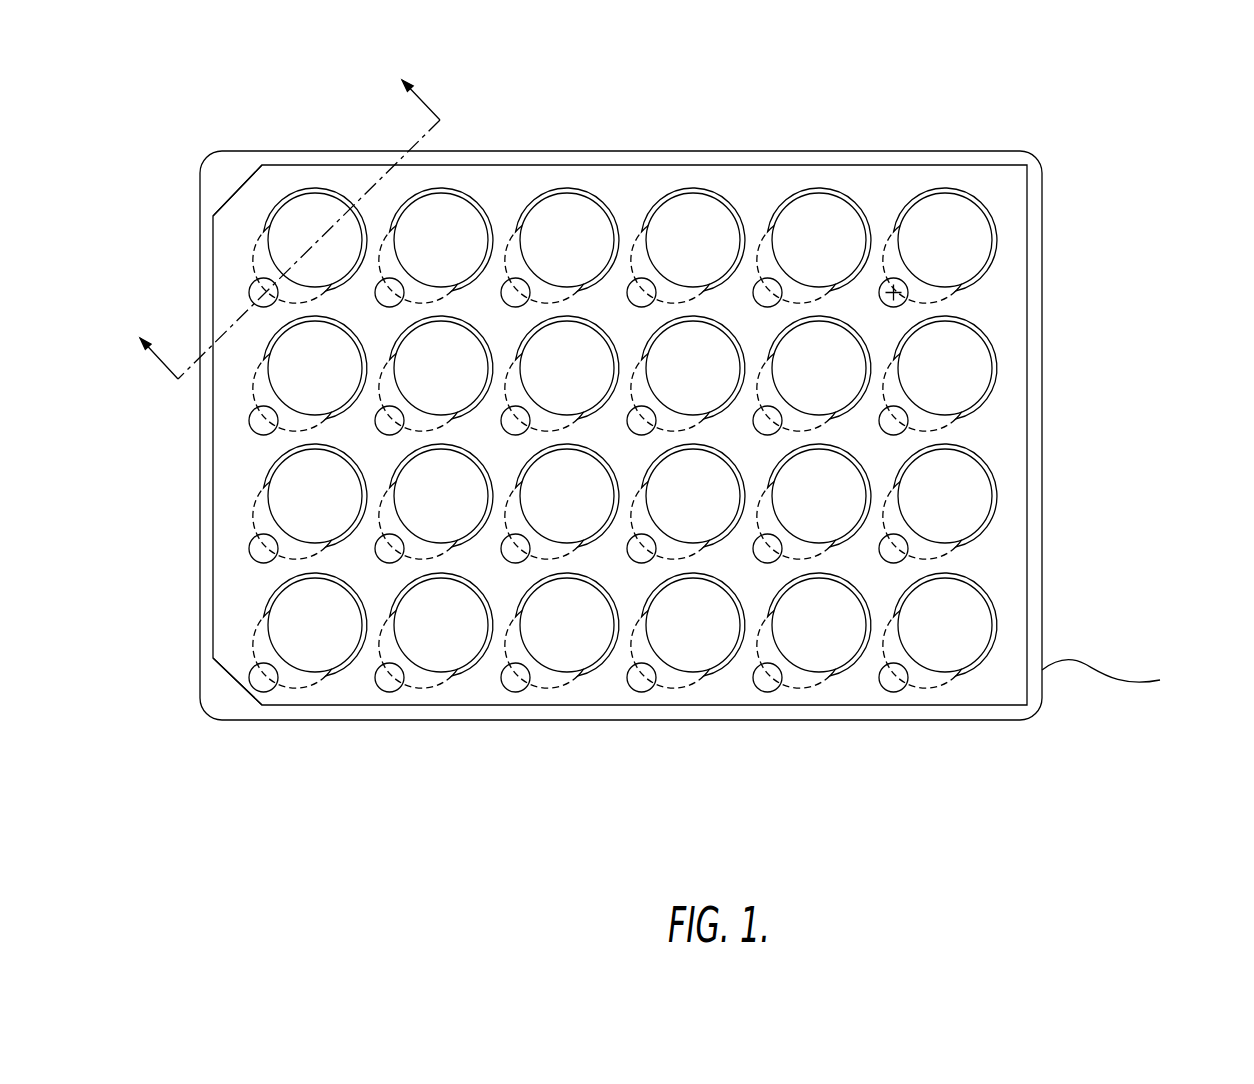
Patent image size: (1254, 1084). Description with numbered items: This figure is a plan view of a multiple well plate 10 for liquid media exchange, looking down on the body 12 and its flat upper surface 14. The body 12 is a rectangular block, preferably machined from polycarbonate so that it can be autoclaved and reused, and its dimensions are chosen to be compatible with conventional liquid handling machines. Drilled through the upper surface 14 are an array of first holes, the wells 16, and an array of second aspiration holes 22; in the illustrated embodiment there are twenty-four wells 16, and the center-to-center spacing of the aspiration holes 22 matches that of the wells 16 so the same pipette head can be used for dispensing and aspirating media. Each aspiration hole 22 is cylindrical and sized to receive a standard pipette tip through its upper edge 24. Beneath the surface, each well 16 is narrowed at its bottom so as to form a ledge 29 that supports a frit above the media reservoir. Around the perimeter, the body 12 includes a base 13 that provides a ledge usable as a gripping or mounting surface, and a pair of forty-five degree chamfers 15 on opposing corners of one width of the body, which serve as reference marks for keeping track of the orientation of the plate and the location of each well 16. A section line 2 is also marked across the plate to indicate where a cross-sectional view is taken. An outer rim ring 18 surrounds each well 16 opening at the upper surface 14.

The section line 2- 2 is at (284, 206).
The multiple well plate 10 is at (1090, 145).
The body 12 is at (1027, 285).
The base 13 is at (1117, 680).
The upper surface 14 is at (1016, 697).
The chamfers 15 is at (240, 187).
The wells 16 is at (707, 212).
The well rim 18 is at (740, 217).
The aspiration holes 22 is at (578, 480).
The upper edge 24 is at (641, 290).
The ledge 29 is at (850, 222).